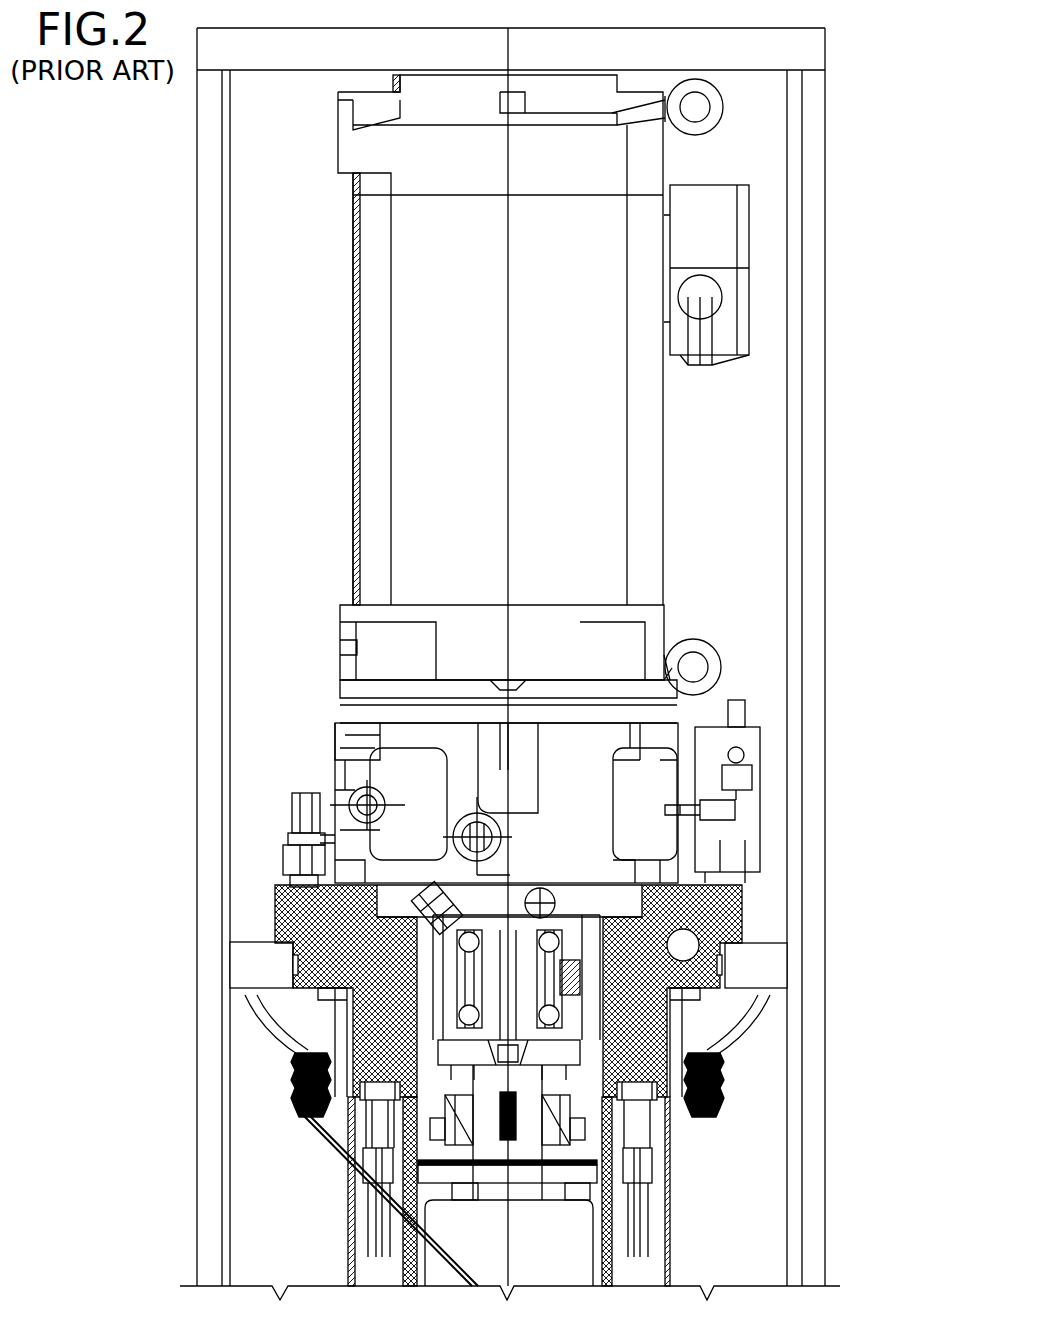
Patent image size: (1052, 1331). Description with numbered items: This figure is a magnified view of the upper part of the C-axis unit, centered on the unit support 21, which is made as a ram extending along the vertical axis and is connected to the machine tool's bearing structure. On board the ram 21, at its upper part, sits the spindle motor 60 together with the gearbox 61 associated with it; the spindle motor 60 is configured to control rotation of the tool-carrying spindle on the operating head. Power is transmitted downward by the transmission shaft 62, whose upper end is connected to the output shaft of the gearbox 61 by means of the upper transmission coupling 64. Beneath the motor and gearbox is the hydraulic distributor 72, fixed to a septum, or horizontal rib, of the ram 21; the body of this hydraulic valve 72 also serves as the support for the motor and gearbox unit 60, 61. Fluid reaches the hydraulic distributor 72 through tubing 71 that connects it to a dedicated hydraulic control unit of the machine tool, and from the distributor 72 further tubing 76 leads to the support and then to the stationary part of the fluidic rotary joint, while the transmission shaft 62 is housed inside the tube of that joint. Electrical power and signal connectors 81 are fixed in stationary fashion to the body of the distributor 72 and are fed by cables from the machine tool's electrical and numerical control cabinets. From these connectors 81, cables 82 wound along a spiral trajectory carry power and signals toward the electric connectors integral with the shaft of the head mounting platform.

The unit support 21 is at (193, 977).
The spindle motor 60 is at (345, 390).
The gearbox 61 is at (570, 790).
The transmission shaft 62 is at (560, 1250).
The upper transmission coupling 64 is at (565, 1125).
The tubing 71 is at (292, 805).
The hydraulic distributor 72 is at (742, 920).
The tubing 76 is at (645, 1215).
The electrical power and signal connectors 81 is at (300, 1075).
The cables 82 is at (330, 1152).